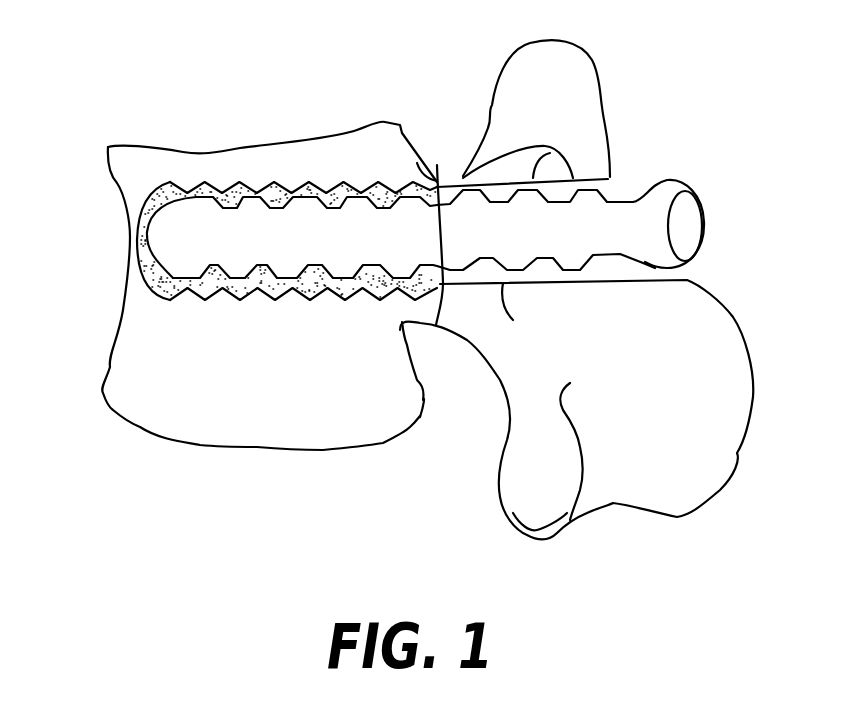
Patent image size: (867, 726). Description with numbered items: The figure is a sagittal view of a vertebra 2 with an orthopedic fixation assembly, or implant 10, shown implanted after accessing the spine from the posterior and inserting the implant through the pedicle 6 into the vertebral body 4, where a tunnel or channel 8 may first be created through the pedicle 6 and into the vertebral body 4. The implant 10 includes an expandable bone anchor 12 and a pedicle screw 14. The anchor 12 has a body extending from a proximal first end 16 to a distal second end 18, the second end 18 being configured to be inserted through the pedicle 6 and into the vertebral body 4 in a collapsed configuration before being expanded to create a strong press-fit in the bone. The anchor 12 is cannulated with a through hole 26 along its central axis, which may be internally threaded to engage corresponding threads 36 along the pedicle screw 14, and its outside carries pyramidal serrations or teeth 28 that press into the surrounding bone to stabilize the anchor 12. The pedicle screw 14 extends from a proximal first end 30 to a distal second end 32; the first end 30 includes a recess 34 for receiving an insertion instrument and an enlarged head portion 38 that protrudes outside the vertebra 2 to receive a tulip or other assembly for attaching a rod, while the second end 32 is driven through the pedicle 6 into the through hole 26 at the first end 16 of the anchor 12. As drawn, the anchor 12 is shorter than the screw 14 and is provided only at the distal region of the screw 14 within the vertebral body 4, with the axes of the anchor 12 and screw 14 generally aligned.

The vertebra 2 is at (382, 124).
The vertebral body 4 is at (140, 158).
The pedicle 6 is at (562, 177).
The channel 8 is at (610, 177).
The orthopedic fixation assembly 10 is at (413, 201).
The expandable bone anchor 12 is at (147, 285).
The pedicle screw 14 is at (623, 255).
The first end 16 is at (436, 325).
The second end 18 is at (143, 203).
The through hole 26 is at (225, 208).
The teeth 28 is at (240, 184).
The first end 30 is at (706, 191).
The second end 32 is at (147, 232).
The recess 34 is at (693, 218).
The threads 36 is at (463, 177).
The head portion 38 is at (677, 188).